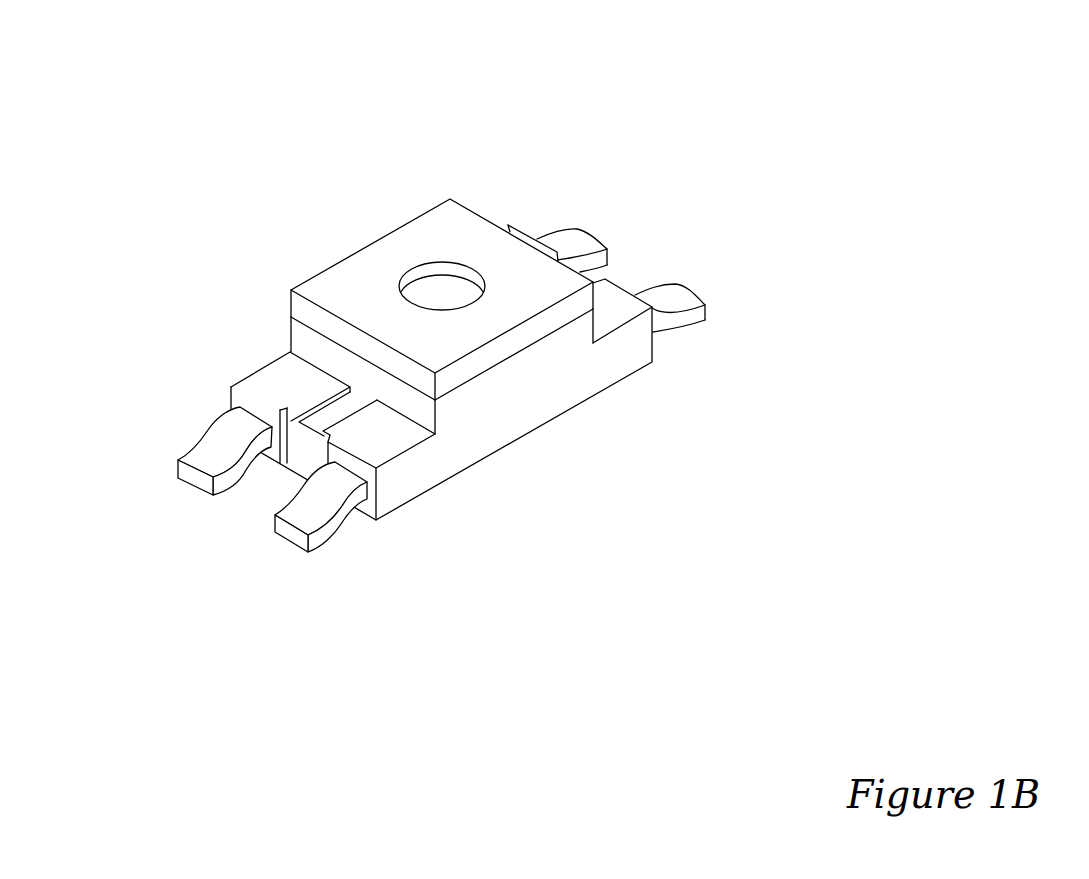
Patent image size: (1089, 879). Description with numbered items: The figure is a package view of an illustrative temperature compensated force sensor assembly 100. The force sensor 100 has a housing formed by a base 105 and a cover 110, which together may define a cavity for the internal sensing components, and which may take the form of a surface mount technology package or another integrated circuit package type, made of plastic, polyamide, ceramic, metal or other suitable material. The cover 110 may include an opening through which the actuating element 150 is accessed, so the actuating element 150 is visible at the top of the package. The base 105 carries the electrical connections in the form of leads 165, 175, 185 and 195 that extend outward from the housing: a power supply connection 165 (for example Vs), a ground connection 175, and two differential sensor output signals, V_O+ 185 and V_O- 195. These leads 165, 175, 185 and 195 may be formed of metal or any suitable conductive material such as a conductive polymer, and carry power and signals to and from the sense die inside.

The temperature compensated force sensor assembly 100 is at (158, 98).
The base 105 is at (278, 380).
The cover 110 is at (335, 292).
The actuating element 150 is at (432, 285).
The power supply connection lead 165 is at (315, 510).
The ground connection lead 175 is at (583, 243).
The differential sensor output lead (V_O+) 185 is at (217, 445).
The differential sensor output lead (V_O-) 195 is at (678, 300).